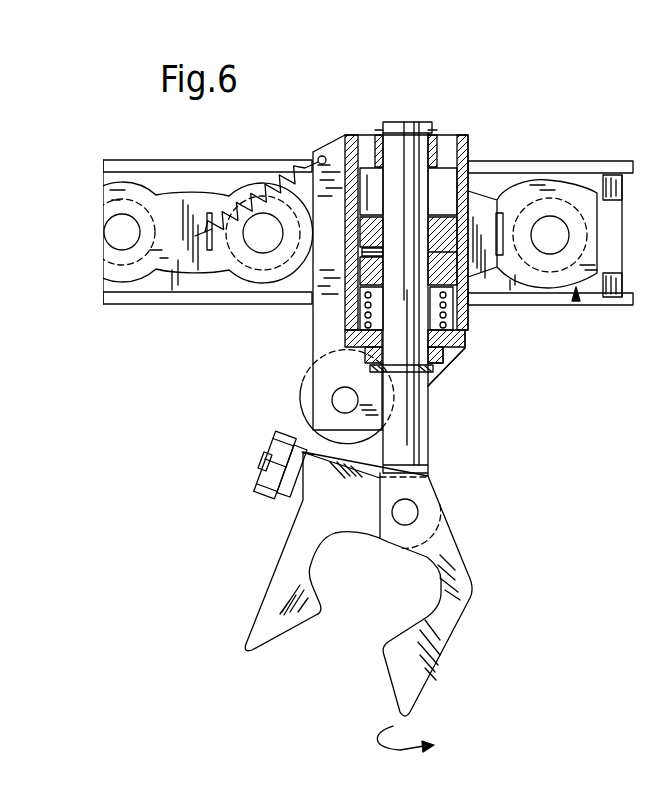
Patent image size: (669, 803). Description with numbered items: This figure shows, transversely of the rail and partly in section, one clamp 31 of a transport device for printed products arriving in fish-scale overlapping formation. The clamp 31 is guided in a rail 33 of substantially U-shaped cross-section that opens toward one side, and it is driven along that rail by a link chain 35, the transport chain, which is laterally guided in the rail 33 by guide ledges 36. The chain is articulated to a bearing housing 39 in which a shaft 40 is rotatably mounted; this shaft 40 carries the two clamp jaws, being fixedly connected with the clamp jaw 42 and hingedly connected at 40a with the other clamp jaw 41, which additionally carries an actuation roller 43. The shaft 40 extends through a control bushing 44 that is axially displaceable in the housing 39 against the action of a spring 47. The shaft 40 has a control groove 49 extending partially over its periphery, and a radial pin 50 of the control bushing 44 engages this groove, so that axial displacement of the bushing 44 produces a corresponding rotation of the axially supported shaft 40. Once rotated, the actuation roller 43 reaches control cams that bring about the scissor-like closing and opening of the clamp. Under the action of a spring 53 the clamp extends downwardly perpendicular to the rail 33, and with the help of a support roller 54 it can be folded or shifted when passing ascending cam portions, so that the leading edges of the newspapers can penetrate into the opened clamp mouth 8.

The clamp mouth 8 is at (355, 602).
The clamp 31 is at (248, 517).
The rail 33 is at (533, 165).
The link chain 35 is at (575, 300).
The guide ledges 36 is at (598, 178).
The bearing housing 39 is at (470, 143).
The shaft 40 is at (413, 435).
The hinge connection 40a is at (410, 509).
The clamp jaw 41 is at (265, 615).
The clamp jaw 42 is at (450, 623).
The actuation roller 43 is at (277, 442).
The control bushing 44 is at (467, 278).
The spring 47 is at (467, 333).
The control groove 49 is at (400, 212).
The radial pin 50 is at (372, 259).
The spring 53 is at (258, 190).
The support roller 54 is at (300, 385).